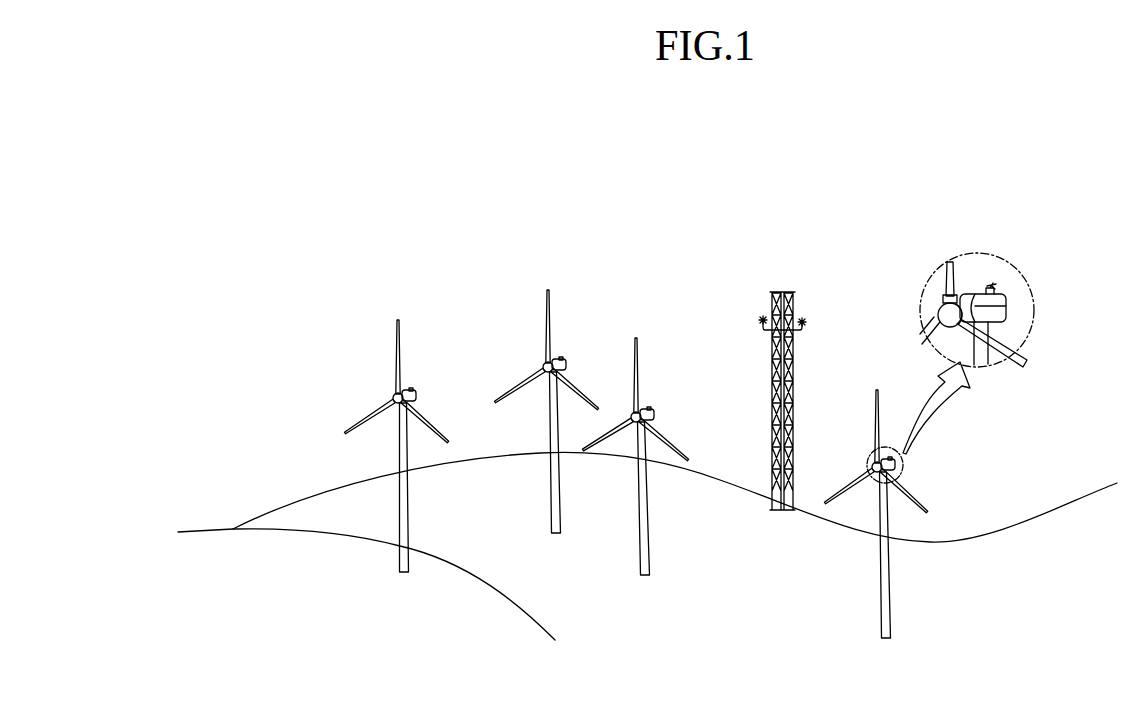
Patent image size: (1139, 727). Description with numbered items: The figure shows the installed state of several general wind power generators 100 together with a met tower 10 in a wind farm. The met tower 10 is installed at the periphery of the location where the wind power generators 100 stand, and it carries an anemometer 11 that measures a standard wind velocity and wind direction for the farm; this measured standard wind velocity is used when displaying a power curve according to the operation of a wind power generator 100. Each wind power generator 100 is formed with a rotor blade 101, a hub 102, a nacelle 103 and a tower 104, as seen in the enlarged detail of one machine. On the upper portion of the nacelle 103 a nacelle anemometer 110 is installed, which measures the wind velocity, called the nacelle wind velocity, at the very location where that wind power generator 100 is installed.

The met tower 10 is at (803, 283).
The anemometer 11 is at (804, 320).
The wind power generator 100 is at (955, 480).
The rotor blade 101 is at (948, 268).
The hub 102 is at (940, 310).
The nacelle 103 is at (1005, 300).
The tower 104 is at (984, 364).
The nacelle anemometer 110 is at (990, 284).